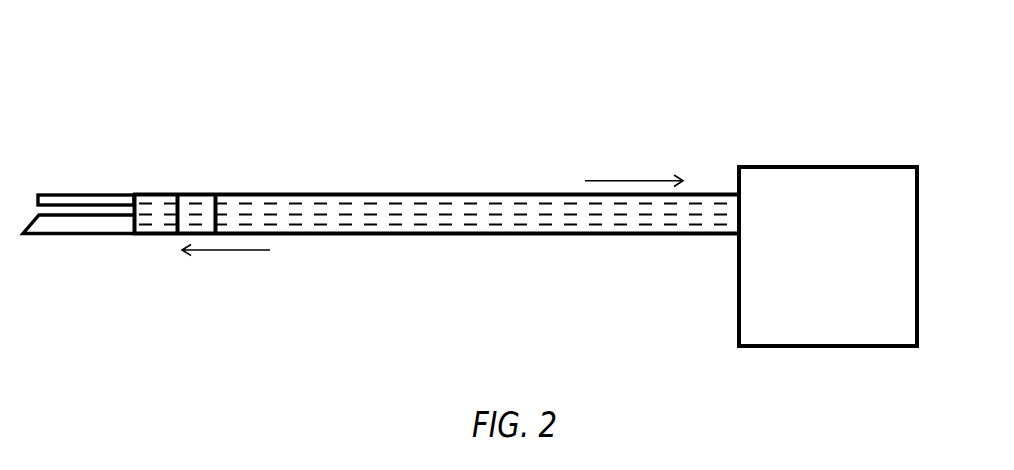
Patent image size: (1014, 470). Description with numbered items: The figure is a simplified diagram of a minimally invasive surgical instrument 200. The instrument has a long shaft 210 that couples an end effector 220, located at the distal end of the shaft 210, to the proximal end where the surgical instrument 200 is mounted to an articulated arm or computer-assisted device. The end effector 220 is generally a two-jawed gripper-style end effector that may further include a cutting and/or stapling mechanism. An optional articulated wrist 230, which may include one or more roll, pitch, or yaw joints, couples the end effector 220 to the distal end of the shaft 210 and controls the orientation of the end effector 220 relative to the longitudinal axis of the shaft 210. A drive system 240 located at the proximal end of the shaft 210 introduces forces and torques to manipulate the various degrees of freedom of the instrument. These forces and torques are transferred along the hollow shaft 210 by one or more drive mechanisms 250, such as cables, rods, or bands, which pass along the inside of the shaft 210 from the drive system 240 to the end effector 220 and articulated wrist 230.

The surgical instrument 200 is at (90, 48).
The shaft 210 is at (440, 235).
The end effector 220 is at (97, 193).
The articulated wrist 230 is at (220, 187).
The drive system 240 is at (798, 348).
The drive mechanisms 250 is at (400, 210).